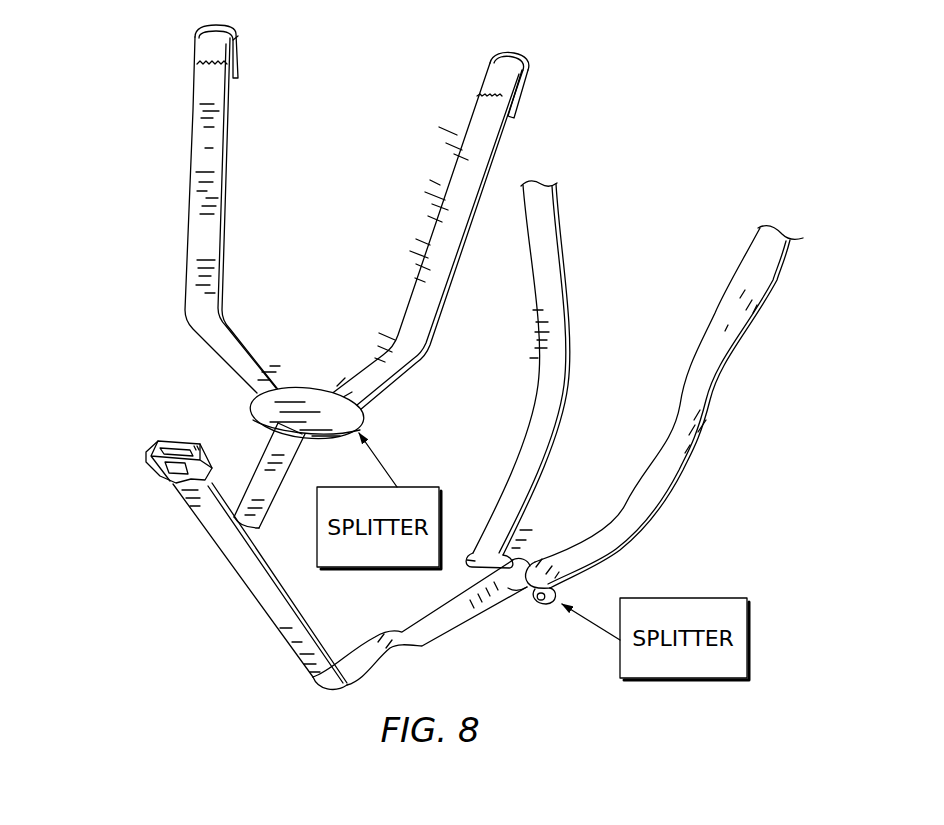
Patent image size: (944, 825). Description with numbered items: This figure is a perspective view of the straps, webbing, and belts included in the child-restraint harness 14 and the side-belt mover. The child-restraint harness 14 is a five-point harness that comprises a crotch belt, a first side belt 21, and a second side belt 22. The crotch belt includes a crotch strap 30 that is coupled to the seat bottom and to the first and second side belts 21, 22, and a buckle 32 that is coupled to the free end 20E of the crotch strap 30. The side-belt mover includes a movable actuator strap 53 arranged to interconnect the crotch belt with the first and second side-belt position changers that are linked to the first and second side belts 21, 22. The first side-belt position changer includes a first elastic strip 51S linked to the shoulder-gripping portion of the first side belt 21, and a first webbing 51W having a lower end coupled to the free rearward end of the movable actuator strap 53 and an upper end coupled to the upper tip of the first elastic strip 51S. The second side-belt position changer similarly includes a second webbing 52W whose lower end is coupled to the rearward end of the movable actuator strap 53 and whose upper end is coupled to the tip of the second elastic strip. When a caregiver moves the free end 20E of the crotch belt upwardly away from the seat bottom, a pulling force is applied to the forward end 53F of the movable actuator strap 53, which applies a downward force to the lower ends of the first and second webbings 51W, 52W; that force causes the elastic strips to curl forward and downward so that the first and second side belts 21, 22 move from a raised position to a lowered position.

The second webbing 52W is at (149, 147).
The first webbing 51W is at (508, 128).
The first elastic strip 51S is at (559, 230).
The second side belt 22 is at (714, 222).
The first side belt 21 is at (662, 528).
The child-restraint harness 14 is at (699, 415).
The movable actuator strap 53 is at (170, 423).
The forward end of movable actuator strap 53F is at (236, 521).
The free end of crotch strap 20E is at (131, 479).
The buckle 32 is at (153, 472).
The crotch strap 30 is at (108, 647).